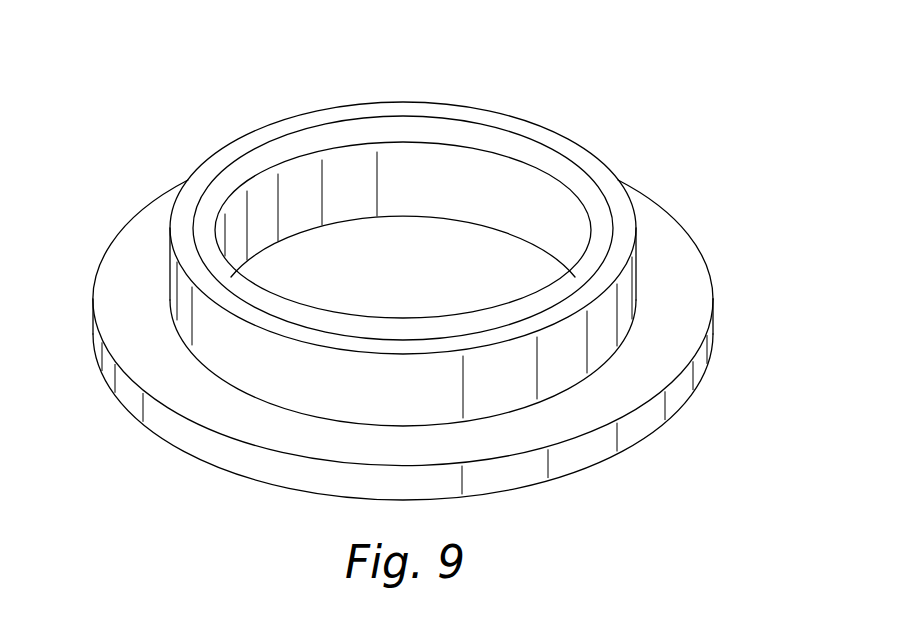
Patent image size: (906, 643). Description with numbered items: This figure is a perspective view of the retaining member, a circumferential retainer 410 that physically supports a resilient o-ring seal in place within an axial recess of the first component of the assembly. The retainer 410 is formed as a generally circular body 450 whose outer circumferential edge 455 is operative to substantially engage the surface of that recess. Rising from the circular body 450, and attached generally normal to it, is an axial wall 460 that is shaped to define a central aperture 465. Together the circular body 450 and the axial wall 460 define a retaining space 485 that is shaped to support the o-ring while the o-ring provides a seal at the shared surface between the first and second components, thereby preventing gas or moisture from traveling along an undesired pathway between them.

The circumferential retainer 410 is at (600, 116).
The circular body 450 is at (148, 258).
The circumferential edge 455 is at (205, 445).
The axial wall 460 is at (296, 125).
The aperture 465 is at (412, 243).
The retaining space 485 is at (688, 236).